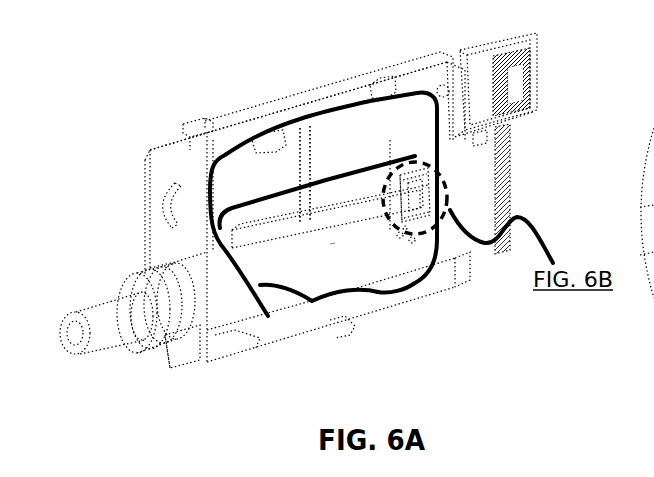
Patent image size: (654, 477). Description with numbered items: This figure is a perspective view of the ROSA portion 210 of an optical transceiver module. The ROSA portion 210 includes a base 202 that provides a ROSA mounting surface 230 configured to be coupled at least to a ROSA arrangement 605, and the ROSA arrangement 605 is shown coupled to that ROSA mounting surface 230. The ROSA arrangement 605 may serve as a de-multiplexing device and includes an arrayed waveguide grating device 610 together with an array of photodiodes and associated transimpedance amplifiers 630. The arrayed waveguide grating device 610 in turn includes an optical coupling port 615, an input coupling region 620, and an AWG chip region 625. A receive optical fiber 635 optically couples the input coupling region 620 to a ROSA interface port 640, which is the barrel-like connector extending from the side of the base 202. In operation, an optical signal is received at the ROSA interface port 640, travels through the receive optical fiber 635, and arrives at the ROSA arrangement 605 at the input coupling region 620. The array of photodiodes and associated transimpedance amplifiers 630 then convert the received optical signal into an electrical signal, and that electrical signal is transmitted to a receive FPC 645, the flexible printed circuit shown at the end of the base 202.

The ROSA portion 210 is at (140, 58).
The base 202 is at (190, 113).
The ROSA arrangement 605 is at (326, 180).
The ROSA mounting surface 230 is at (362, 116).
The receive FPC 645 is at (532, 48).
The array of photodiodes and associated transimpedance amplifiers 630 is at (450, 178).
The ROSA interface port 640 is at (110, 337).
The receive optical fiber 635 is at (260, 285).
The optical coupling port 615 is at (268, 316).
The input coupling region 620 is at (333, 262).
The arrayed waveguide grating device 610 is at (378, 292).
The AWG chip region 625 is at (372, 218).